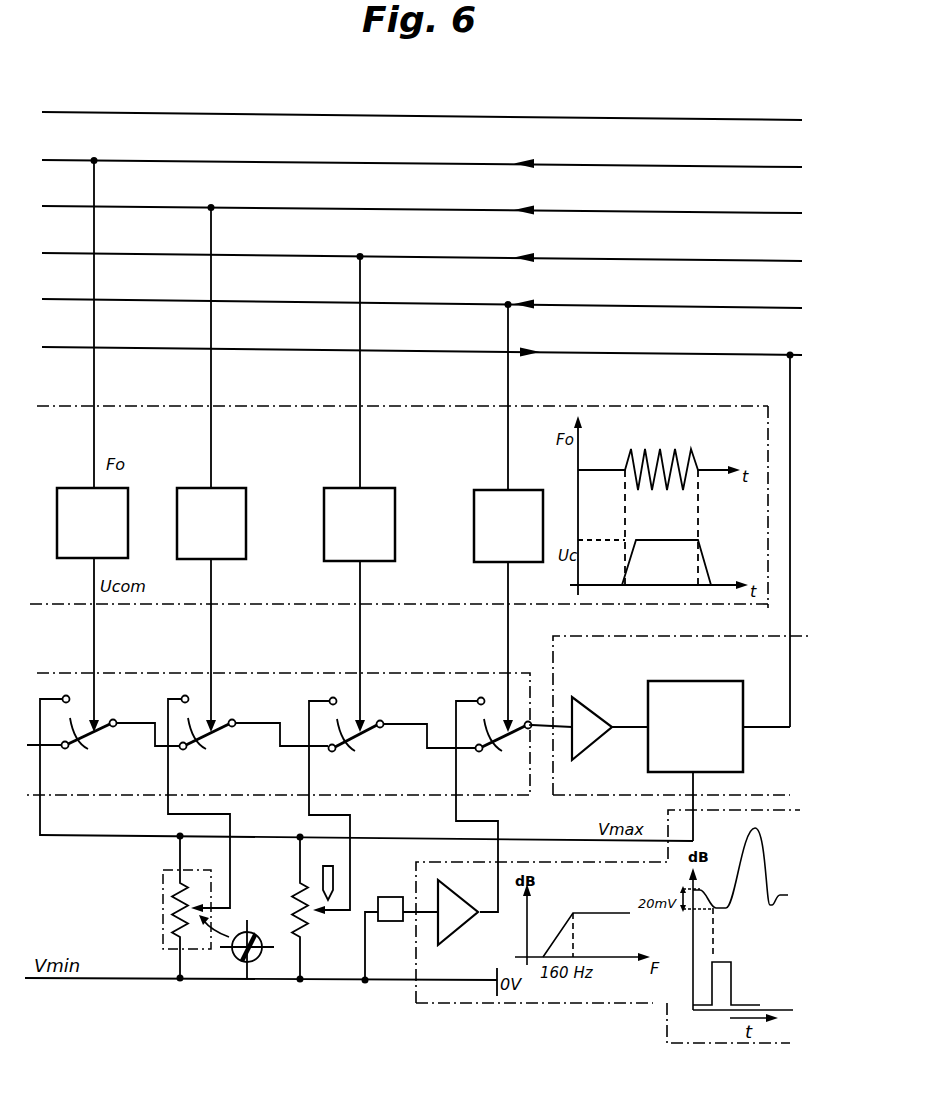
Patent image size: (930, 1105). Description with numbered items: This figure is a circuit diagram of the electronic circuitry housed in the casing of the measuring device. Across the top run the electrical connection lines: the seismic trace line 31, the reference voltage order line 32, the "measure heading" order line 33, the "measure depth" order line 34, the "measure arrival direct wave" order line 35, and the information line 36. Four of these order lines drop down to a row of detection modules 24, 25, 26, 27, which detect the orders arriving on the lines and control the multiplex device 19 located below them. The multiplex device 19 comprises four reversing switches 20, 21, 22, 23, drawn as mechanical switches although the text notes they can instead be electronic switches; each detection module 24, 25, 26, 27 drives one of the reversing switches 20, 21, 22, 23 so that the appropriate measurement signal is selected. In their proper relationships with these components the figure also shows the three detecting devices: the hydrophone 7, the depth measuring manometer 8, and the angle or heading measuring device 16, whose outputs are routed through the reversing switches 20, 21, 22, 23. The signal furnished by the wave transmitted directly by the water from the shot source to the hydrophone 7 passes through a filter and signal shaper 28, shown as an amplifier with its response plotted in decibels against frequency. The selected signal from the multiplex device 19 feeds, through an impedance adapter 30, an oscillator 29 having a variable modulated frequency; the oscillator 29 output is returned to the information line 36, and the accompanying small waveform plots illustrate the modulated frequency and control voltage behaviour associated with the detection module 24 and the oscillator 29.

The hydrophone 7 is at (392, 921).
The depth measuring manometer 8 is at (305, 930).
The angle or heading measuring device 16 is at (163, 908).
The multiplex device 19 is at (305, 672).
The reversing switch 20 is at (514, 805).
The reversing switch 21 is at (392, 806).
The reversing switch 22 is at (248, 804).
The reversing switch 23 is at (103, 766).
The detection module 24 is at (543, 527).
The detection module 25 is at (395, 548).
The detection module 26 is at (246, 553).
The detection module 27 is at (128, 541).
The filter and signal shaper 28 is at (465, 917).
The oscillator 29 is at (732, 700).
The impedance adapter 30 is at (600, 717).
The seismic trace line 31 is at (424, 117).
The reference voltage order line 32 is at (424, 164).
The "measure heading" order line 33 is at (424, 210).
The "measure depth" order line 34 is at (424, 257).
The "measure arrival direct wave" order line 35 is at (424, 303).
The information line 36 is at (424, 351).